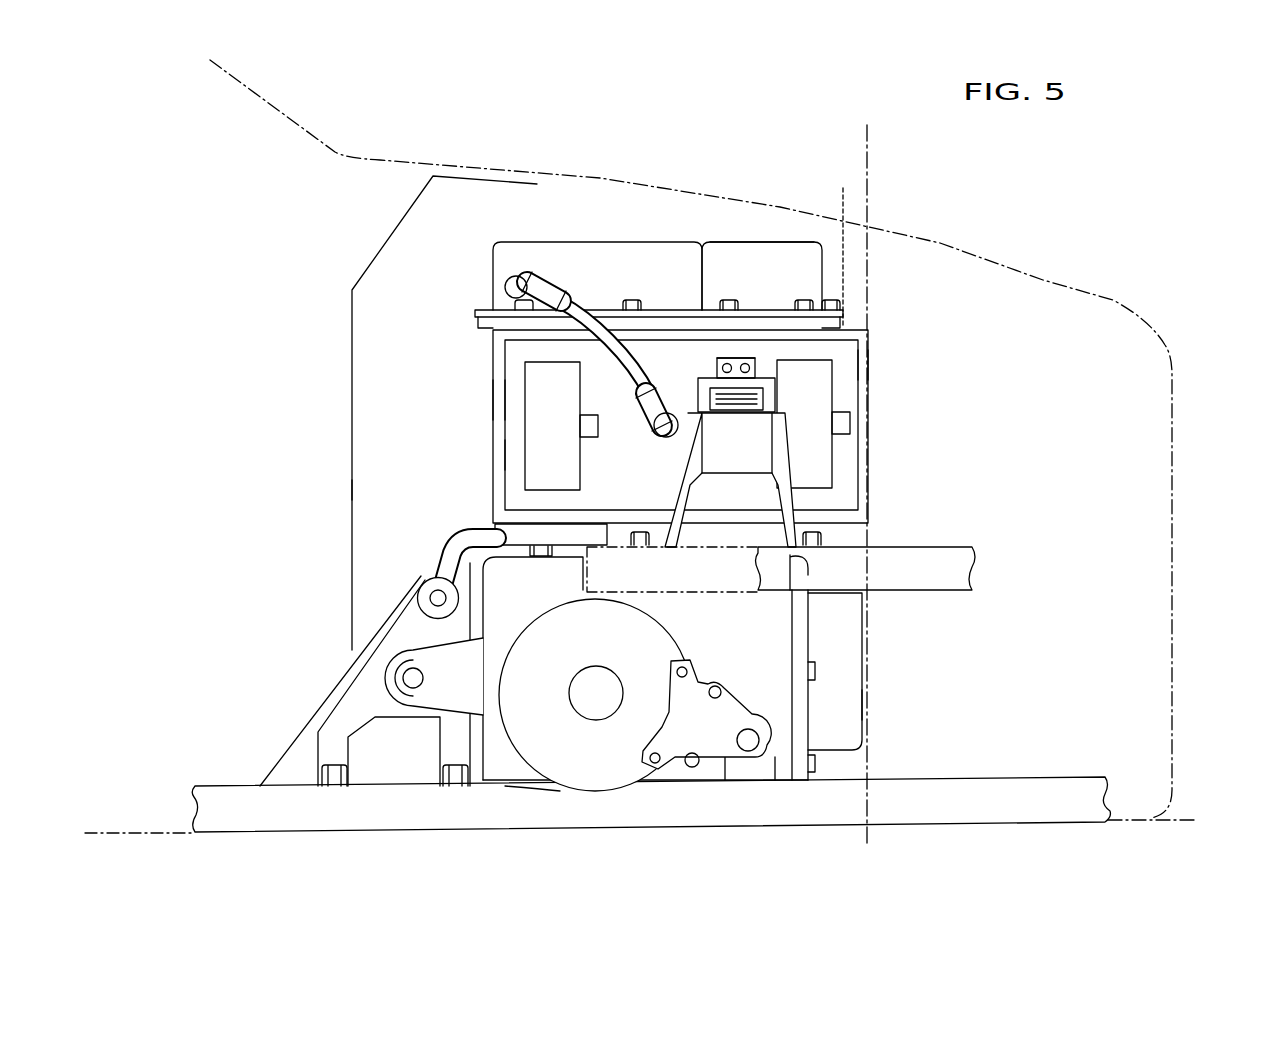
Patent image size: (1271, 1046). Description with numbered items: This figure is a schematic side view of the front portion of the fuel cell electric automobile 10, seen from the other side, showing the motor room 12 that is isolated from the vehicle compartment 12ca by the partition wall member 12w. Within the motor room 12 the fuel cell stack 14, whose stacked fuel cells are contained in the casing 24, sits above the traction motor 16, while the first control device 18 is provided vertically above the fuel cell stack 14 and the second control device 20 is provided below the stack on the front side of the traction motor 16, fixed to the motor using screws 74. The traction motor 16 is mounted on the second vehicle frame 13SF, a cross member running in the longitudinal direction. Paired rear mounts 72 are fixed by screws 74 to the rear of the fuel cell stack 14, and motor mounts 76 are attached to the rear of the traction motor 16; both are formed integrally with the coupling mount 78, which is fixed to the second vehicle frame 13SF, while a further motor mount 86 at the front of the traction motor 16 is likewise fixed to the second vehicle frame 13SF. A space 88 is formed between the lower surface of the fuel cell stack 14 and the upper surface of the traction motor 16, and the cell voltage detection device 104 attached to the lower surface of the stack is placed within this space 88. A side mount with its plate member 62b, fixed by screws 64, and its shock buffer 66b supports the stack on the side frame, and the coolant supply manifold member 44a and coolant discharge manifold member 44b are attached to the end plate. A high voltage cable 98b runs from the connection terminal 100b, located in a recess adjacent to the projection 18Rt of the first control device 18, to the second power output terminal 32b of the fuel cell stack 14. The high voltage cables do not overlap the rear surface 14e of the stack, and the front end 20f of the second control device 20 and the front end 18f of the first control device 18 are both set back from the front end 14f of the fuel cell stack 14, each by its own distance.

The fuel cell electric automobile 10 is at (1123, 151).
The motor room 12 is at (1043, 287).
The partition wall member 12w is at (350, 398).
The vehicle compartment 12ca is at (338, 492).
The second vehicle frame 13SF is at (1043, 792).
The fuel cell stack 14 is at (481, 361).
The rear surface of the fuel cell stack 14e is at (497, 405).
The front end of the fuel cell stack 14f is at (869, 366).
The traction motor 16 is at (556, 790).
The first control device 18 is at (669, 240).
The projection 18Rt is at (810, 283).
The front end of the first control device 18f is at (845, 309).
The second control device 20 is at (848, 726).
The front end of the second control device 20f is at (865, 707).
The casing 24 is at (511, 460).
The second power output terminal 32b is at (658, 438).
The coolant supply manifold member 44a is at (535, 426).
The coolant discharge manifold member 44b is at (822, 455).
The plate member 62b is at (742, 357).
The screws 64 is at (715, 367).
The shock buffer 66b is at (752, 458).
The rear mounts 72 is at (452, 548).
The screws 74 is at (641, 305).
The motor mounts 76 is at (470, 688).
The coupling mount 78 is at (400, 632).
The motor mount 86 is at (727, 716).
The space 88 is at (713, 535).
The high voltage cable 98b is at (581, 307).
The connection terminal 100b is at (504, 288).
The cell voltage detection device 104 is at (513, 546).